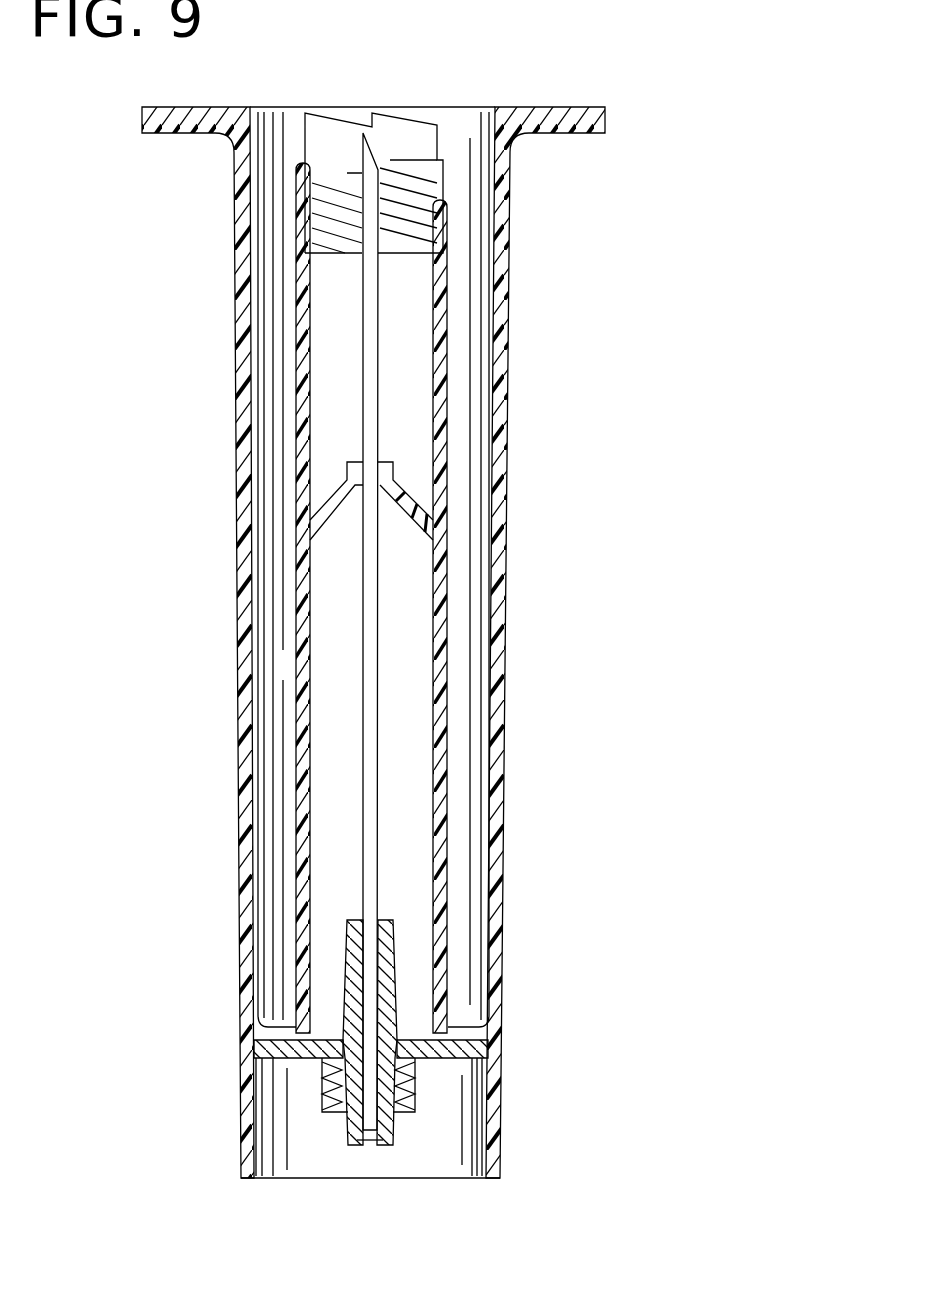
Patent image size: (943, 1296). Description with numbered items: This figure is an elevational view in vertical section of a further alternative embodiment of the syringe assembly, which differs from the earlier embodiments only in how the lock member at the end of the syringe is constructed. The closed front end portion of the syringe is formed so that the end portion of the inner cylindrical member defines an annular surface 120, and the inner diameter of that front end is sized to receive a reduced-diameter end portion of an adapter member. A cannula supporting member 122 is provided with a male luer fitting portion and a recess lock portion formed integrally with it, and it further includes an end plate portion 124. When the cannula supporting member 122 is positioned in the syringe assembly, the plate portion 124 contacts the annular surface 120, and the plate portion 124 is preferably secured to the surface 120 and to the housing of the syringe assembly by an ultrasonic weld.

The annular surface 120 is at (478, 1058).
The cannula supporting member 122 is at (347, 1040).
The end plate portion 124 is at (447, 1060).